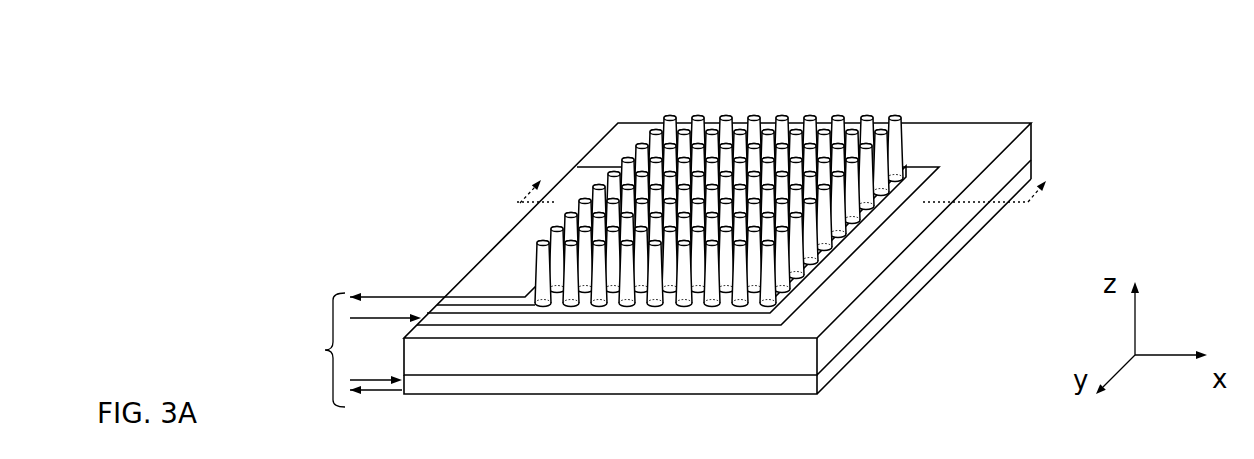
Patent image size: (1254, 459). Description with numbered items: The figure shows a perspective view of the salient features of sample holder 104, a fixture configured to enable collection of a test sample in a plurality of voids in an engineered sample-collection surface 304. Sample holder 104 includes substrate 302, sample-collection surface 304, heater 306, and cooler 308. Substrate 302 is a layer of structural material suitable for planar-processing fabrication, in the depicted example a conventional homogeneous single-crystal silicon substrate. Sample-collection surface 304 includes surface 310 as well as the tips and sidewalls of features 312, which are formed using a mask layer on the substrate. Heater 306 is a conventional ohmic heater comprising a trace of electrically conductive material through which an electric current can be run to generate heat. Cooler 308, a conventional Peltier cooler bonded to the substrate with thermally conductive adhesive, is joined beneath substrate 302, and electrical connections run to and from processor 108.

The sample holder 104 is at (510, 70).
The sample-collection surface 304 is at (903, 67).
The surface 310 is at (989, 131).
The features 312 is at (607, 175).
The heater 306 is at (816, 284).
The substrate 302 is at (664, 372).
The cooler 308 is at (735, 396).
The processor 108 is at (288, 350).